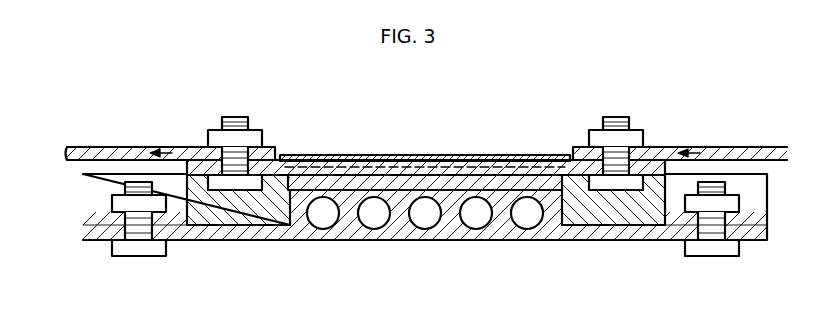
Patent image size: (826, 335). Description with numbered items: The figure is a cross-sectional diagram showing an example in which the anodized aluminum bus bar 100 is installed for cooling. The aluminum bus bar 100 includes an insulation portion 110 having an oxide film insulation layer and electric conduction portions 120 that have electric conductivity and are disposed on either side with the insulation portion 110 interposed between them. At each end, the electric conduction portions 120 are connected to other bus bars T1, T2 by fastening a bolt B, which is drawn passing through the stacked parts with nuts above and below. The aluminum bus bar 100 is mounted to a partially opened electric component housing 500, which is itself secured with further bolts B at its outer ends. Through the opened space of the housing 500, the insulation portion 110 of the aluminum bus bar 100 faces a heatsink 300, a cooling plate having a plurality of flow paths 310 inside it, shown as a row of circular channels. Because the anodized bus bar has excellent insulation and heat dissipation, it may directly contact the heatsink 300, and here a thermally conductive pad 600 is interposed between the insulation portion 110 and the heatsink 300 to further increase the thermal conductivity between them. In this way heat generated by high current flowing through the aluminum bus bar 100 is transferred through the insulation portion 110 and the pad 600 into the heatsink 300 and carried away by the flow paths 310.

The aluminum bus bar 100 is at (351, 136).
The insulation portion 110 is at (424, 156).
The electric conduction portions 120 is at (203, 167).
The heatsink 300 is at (300, 240).
The flow paths 310 is at (375, 215).
The electric component housing 500 is at (83, 219).
The thermally conductive pad 600 is at (455, 190).
The bus bar T1 is at (107, 150).
The bus bar T2 is at (745, 150).
The bolt B is at (233, 116).